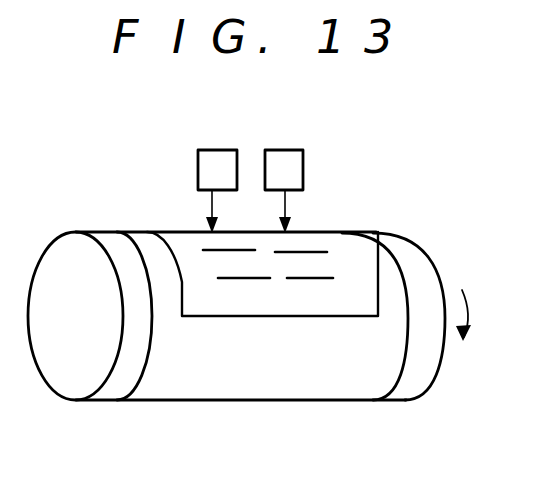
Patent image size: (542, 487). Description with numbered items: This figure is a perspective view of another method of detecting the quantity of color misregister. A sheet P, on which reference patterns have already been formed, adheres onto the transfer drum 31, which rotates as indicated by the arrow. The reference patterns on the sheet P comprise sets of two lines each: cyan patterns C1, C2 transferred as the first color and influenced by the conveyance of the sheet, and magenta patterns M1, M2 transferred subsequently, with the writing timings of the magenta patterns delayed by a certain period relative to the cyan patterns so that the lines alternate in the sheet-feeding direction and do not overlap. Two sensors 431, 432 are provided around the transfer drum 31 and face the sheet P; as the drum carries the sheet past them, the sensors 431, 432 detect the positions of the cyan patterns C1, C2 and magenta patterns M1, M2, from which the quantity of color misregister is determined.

The transfer drum 31 is at (332, 402).
The sheet P is at (363, 277).
The cyan pattern C1 is at (250, 280).
The cyan pattern C2 is at (244, 252).
The magenta pattern M1 is at (308, 280).
The magenta pattern M2 is at (300, 253).
The sensor 431 is at (300, 150).
The sensor 432 is at (217, 150).